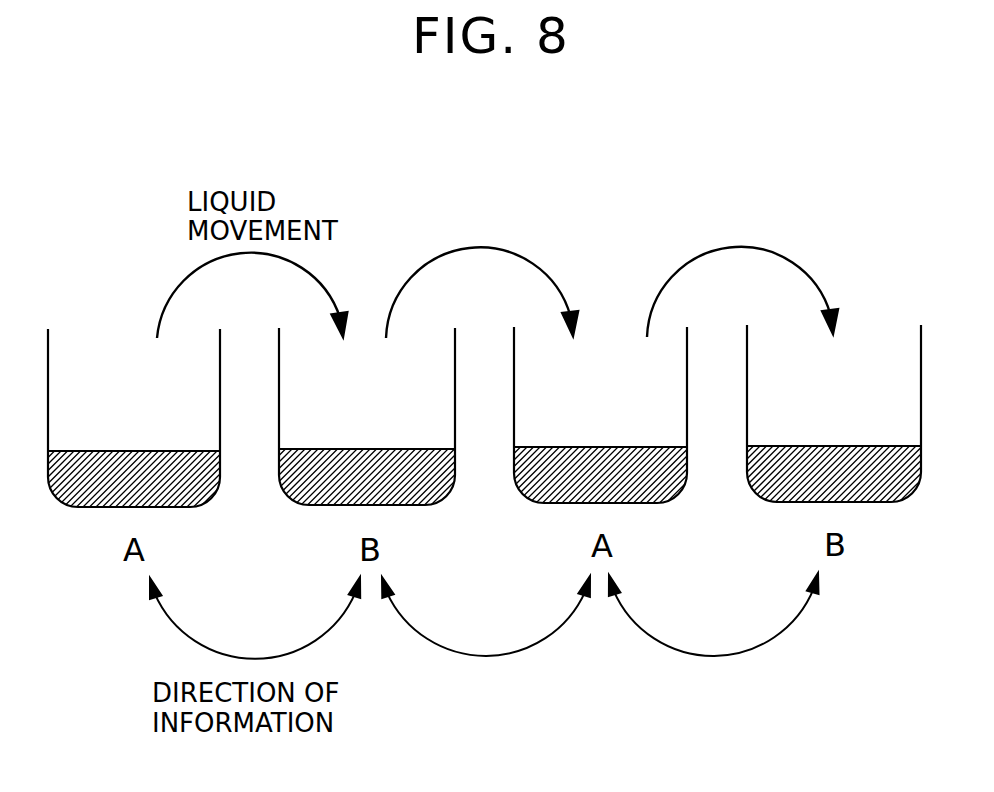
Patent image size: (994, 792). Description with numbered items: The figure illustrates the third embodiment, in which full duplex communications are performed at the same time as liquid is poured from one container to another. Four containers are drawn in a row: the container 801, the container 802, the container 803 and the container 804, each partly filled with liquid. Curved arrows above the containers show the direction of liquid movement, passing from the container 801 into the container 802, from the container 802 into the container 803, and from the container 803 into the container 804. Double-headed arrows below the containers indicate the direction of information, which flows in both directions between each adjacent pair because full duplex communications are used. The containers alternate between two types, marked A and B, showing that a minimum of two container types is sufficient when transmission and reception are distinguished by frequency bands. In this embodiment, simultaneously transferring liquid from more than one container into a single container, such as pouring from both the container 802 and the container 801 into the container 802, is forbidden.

The container 801 is at (138, 418).
The container 802 is at (365, 416).
The container 803 is at (600, 415).
The container 804 is at (833, 413).